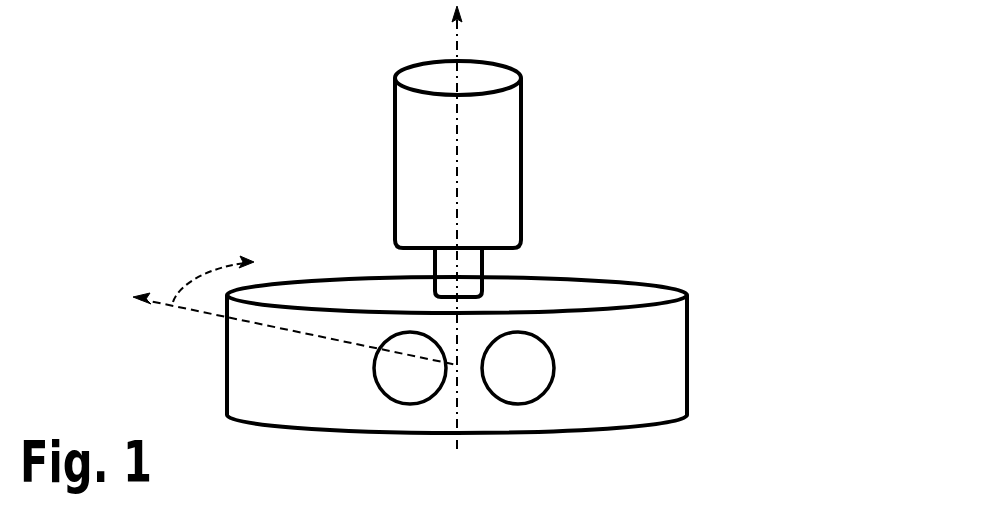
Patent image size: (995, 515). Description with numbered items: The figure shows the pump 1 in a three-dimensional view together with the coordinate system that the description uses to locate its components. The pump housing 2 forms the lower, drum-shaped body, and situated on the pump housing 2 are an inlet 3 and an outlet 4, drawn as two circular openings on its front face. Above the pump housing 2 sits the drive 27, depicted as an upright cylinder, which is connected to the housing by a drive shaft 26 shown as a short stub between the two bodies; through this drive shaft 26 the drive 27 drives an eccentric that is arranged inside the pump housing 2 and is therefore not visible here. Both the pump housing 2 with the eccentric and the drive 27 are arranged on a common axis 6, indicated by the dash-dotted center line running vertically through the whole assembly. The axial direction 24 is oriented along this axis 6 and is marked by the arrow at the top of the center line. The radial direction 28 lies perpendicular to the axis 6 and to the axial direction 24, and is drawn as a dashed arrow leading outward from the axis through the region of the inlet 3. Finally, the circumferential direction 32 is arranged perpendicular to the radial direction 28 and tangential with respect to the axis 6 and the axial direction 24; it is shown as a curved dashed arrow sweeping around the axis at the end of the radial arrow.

The pump 1 is at (286, 159).
The pump housing 2 is at (226, 367).
The inlet 3 is at (381, 397).
The outlet 4 is at (546, 397).
The axis 6 is at (459, 152).
The axial direction 24 is at (459, 42).
The drive shaft 26 is at (483, 261).
The drive 27 is at (522, 194).
The radial direction 28 is at (155, 300).
The circumferential direction 32 is at (217, 268).